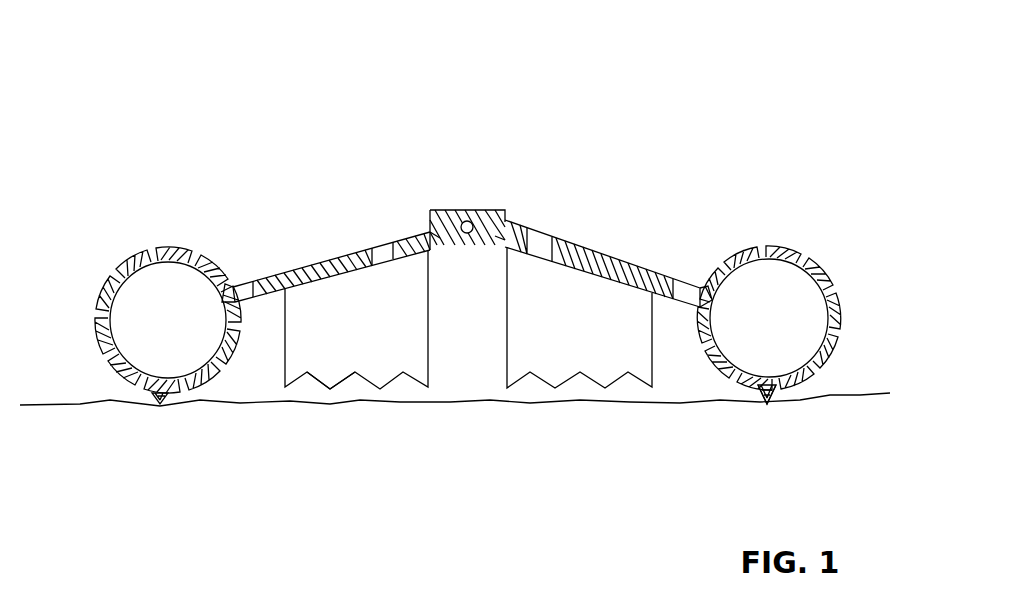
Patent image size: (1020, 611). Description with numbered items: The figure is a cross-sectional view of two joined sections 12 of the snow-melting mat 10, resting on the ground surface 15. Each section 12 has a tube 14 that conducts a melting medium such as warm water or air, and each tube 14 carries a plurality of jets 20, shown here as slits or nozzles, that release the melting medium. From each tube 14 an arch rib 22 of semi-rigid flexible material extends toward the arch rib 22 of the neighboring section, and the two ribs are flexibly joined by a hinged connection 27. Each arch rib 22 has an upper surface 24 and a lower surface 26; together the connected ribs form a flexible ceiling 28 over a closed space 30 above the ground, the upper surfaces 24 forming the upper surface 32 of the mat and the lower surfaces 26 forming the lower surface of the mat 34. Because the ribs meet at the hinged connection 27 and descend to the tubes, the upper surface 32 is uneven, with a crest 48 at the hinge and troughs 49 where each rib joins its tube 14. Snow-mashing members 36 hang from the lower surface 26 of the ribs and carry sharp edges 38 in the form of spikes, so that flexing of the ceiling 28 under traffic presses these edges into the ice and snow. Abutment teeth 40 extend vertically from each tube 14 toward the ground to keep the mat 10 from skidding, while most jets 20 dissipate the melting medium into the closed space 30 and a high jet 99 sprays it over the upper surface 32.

The mat 10 is at (175, 85).
The section 12 is at (345, 171).
The tube 14 is at (170, 300).
The ground surface 15 is at (652, 400).
The jet 20 is at (827, 278).
The arch rib 22 is at (648, 272).
The upper surface of the arch rib 24 is at (592, 252).
The lower surface of the arch rib 26 is at (503, 246).
The hinged connection 27 is at (469, 221).
The flexible ceiling 28 is at (436, 242).
The closed space 30 is at (467, 340).
The upper surface of the mat 32 is at (410, 236).
The lower surface of the mat 34 is at (278, 300).
The snow-mashing member 36 is at (597, 345).
The sharp edges 38 is at (330, 390).
The abutment tooth 40 is at (770, 405).
The crest 48 is at (449, 176).
The trough 49 is at (241, 256).
The high jet 99 is at (705, 275).